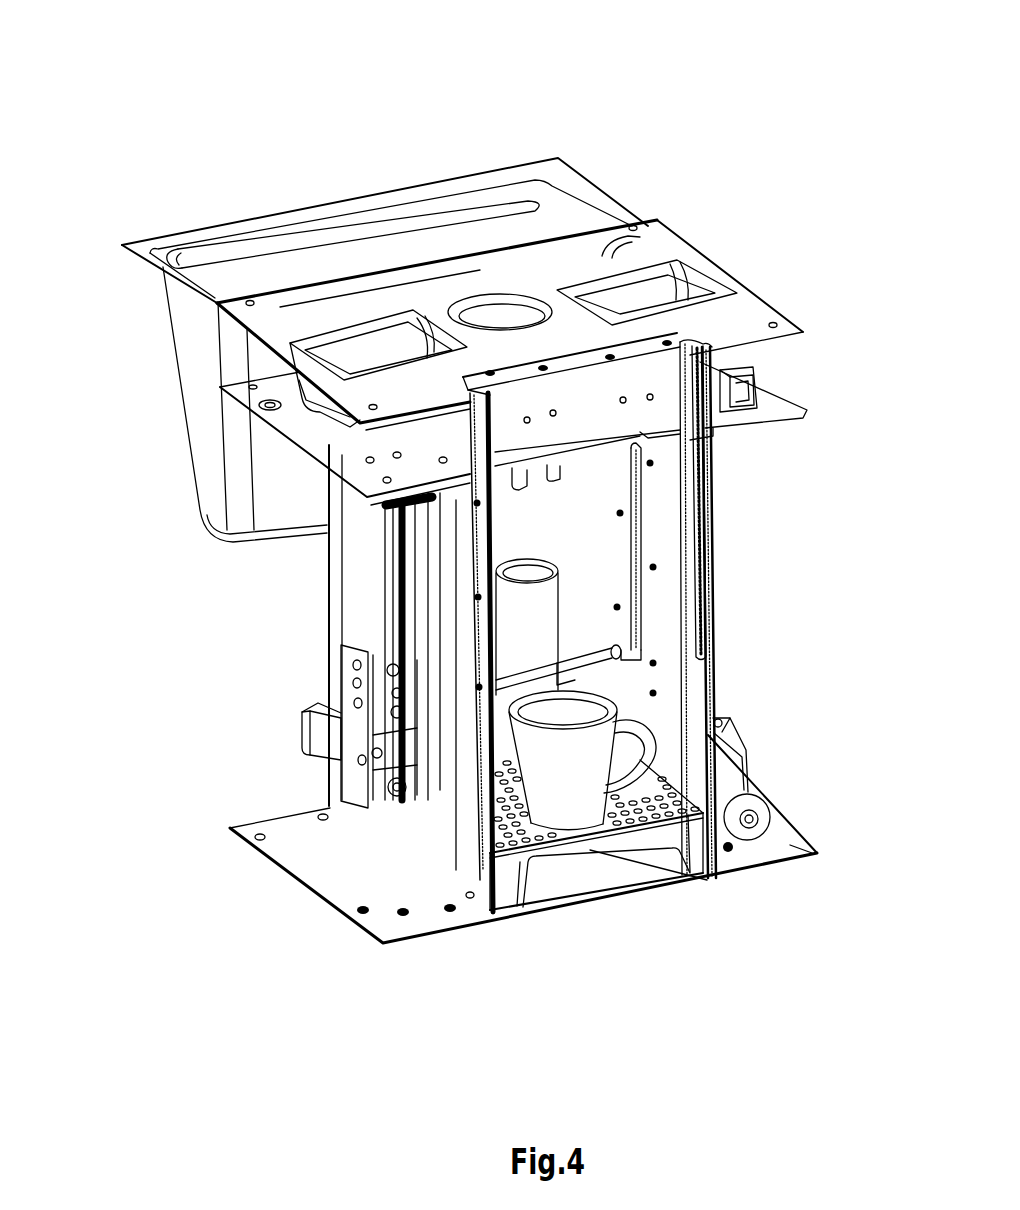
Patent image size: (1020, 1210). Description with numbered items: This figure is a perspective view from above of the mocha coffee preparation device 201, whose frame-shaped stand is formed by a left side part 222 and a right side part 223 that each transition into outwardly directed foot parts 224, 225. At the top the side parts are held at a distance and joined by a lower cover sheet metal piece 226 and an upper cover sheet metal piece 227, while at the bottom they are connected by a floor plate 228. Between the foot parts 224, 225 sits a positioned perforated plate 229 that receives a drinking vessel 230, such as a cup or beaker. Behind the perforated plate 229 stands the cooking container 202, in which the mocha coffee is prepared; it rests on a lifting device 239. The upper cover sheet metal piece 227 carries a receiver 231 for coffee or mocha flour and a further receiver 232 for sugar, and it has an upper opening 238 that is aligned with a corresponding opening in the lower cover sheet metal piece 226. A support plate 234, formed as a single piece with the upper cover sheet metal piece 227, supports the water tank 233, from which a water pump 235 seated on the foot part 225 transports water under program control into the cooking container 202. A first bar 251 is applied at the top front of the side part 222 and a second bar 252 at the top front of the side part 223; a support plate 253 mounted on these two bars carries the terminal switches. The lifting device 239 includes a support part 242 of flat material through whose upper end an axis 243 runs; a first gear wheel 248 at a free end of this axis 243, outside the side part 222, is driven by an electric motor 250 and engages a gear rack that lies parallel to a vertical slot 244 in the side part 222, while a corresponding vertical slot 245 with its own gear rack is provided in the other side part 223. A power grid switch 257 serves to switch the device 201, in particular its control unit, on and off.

The device 201 is at (396, 114).
The cooking container 202 is at (552, 660).
The left side part 222 is at (390, 823).
The right side part 223 is at (697, 720).
The foot part 224 is at (330, 893).
The foot part 225 is at (800, 855).
The lower cover sheet metal piece 226 is at (287, 422).
The upper cover sheet metal piece 227 is at (762, 306).
The floor plate 228 is at (610, 880).
The perforated plate 229 is at (562, 847).
The drinking vessel 230 is at (594, 785).
The receiver for coffee flour 231 is at (217, 383).
The receiver for sugar 232 is at (683, 275).
The water tank 233 is at (187, 382).
The support plate 234 is at (592, 190).
The water pump 235 is at (742, 778).
The upper opening 238 is at (497, 318).
The lifting device 239 is at (584, 600).
The support part 242 is at (742, 770).
The axis 243 is at (388, 668).
The slot 244 is at (400, 503).
The slot 245 is at (635, 500).
The first gear wheel 248 is at (346, 718).
The electric motor 250 is at (320, 755).
The first bar 251 is at (505, 449).
The second bar 252 is at (703, 357).
The support plate 253 is at (648, 430).
The power grid switch 257 is at (742, 390).